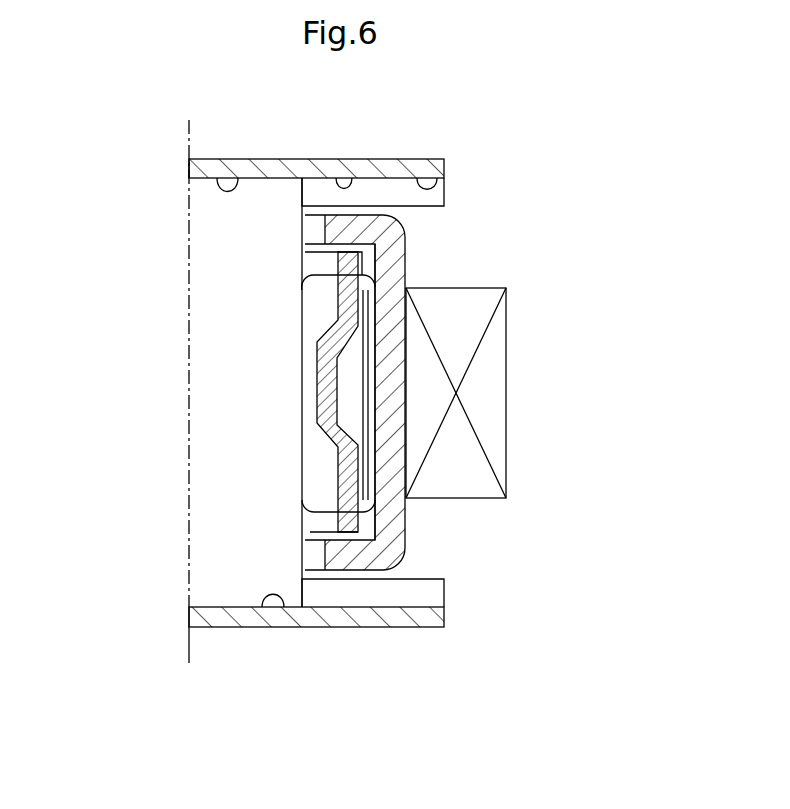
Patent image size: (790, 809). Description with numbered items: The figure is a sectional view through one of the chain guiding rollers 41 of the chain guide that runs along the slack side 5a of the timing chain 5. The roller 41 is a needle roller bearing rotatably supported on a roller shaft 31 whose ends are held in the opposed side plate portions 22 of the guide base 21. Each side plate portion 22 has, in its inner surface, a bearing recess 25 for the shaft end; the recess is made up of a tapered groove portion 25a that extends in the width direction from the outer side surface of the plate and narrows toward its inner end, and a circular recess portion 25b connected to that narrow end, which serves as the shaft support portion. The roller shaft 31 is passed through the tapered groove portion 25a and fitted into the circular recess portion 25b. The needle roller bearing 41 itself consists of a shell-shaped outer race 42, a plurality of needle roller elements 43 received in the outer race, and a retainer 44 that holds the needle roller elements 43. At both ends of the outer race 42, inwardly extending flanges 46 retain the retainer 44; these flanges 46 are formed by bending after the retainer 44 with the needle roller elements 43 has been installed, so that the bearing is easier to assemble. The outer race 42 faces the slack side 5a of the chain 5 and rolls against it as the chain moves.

The timing chain 5 is at (507, 393).
The slack side 5a is at (492, 388).
The guide base 21 is at (193, 169).
The side plate portion 22 is at (380, 168).
The bearing recess 25 is at (437, 178).
The tapered groove portion 25a is at (346, 178).
The circular recess portion 25b is at (236, 178).
The roller shaft 31 is at (213, 497).
The chain guiding roller 41 is at (408, 236).
The outer race 42 is at (397, 453).
The needle roller element 43 is at (313, 323).
The retainer 44 is at (348, 318).
The inwardly extending flange 46 is at (333, 230).